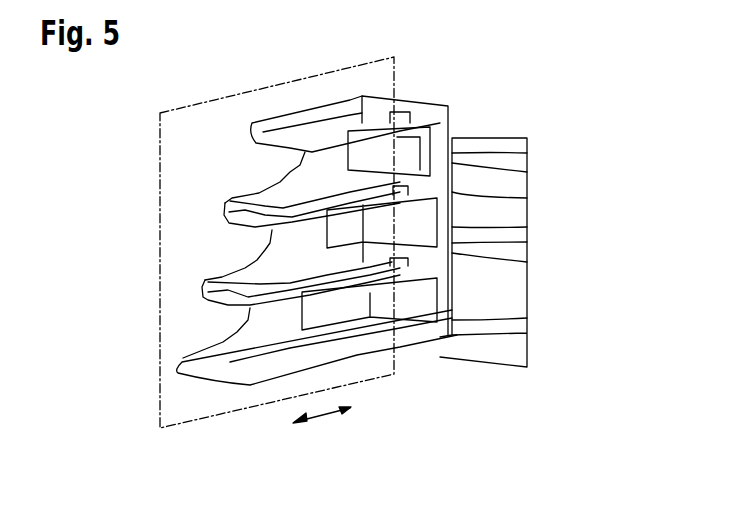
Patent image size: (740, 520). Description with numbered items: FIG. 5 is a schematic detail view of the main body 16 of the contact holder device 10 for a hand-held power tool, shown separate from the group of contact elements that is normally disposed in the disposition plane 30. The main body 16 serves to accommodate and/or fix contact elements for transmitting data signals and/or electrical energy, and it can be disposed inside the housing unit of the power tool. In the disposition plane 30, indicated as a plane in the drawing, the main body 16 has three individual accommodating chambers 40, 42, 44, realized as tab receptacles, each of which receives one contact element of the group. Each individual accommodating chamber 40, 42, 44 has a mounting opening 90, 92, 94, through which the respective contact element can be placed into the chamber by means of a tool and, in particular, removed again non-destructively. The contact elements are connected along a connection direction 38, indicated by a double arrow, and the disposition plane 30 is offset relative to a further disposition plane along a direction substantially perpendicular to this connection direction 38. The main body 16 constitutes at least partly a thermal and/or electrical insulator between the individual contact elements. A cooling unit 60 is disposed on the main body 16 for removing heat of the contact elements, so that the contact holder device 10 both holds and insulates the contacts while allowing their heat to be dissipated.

The contact holder device 10 is at (549, 109).
The main body 16 is at (500, 308).
The disposition plane 30 is at (180, 370).
The connection direction 38 is at (323, 417).
The individual accommodating chamber 40 is at (297, 158).
The individual accommodating chamber 42 is at (267, 242).
The individual accommodating chamber 44 is at (247, 318).
The cooling unit 60 is at (479, 372).
The mounting opening 90 is at (418, 105).
The mounting opening 92 is at (527, 197).
The mounting opening 94 is at (440, 263).